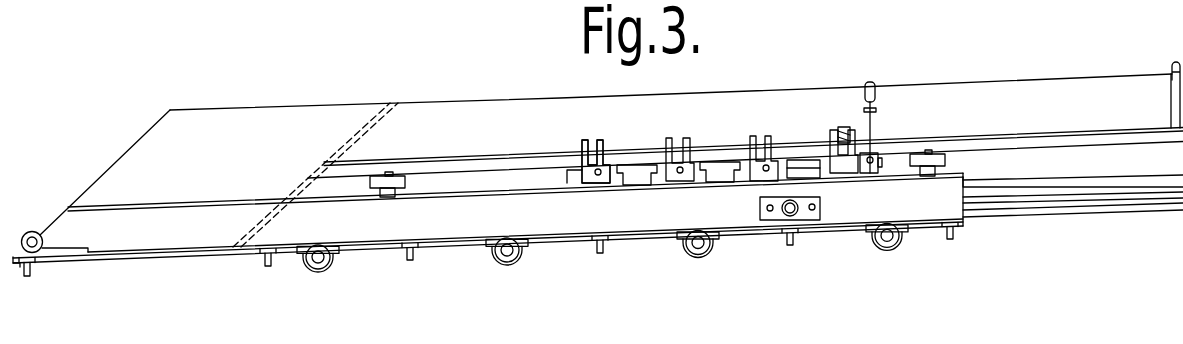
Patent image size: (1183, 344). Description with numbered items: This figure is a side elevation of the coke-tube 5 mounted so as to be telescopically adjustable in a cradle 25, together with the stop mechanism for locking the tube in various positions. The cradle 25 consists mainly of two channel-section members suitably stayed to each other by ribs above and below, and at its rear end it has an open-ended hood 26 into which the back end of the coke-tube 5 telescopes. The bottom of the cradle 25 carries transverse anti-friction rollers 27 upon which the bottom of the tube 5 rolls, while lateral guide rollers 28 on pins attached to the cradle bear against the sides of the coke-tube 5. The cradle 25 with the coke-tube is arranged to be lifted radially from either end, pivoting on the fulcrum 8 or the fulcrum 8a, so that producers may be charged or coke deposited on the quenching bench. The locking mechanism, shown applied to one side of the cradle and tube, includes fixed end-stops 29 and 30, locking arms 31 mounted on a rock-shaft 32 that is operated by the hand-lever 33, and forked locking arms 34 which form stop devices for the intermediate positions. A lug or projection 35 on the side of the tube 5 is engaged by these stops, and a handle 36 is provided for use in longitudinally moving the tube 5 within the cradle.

The coke-tube 5 is at (1090, 185).
The fulcrum 8 is at (788, 217).
The fulcrum 8a is at (32, 231).
The cradle 25 is at (618, 215).
The open-ended hood 26 is at (160, 142).
The transverse anti-friction rollers 27 is at (707, 252).
The lateral guide rollers 28 is at (393, 182).
The fixed end-stop 29 is at (856, 146).
The fixed end-stop 30 is at (585, 158).
The locking arms 31 is at (599, 157).
The rock-shaft 32 is at (803, 165).
The hand-lever 33 is at (874, 95).
The forked locking arms 34 is at (672, 160).
The lug or projection 35 is at (846, 127).
The handle 36 is at (1173, 66).